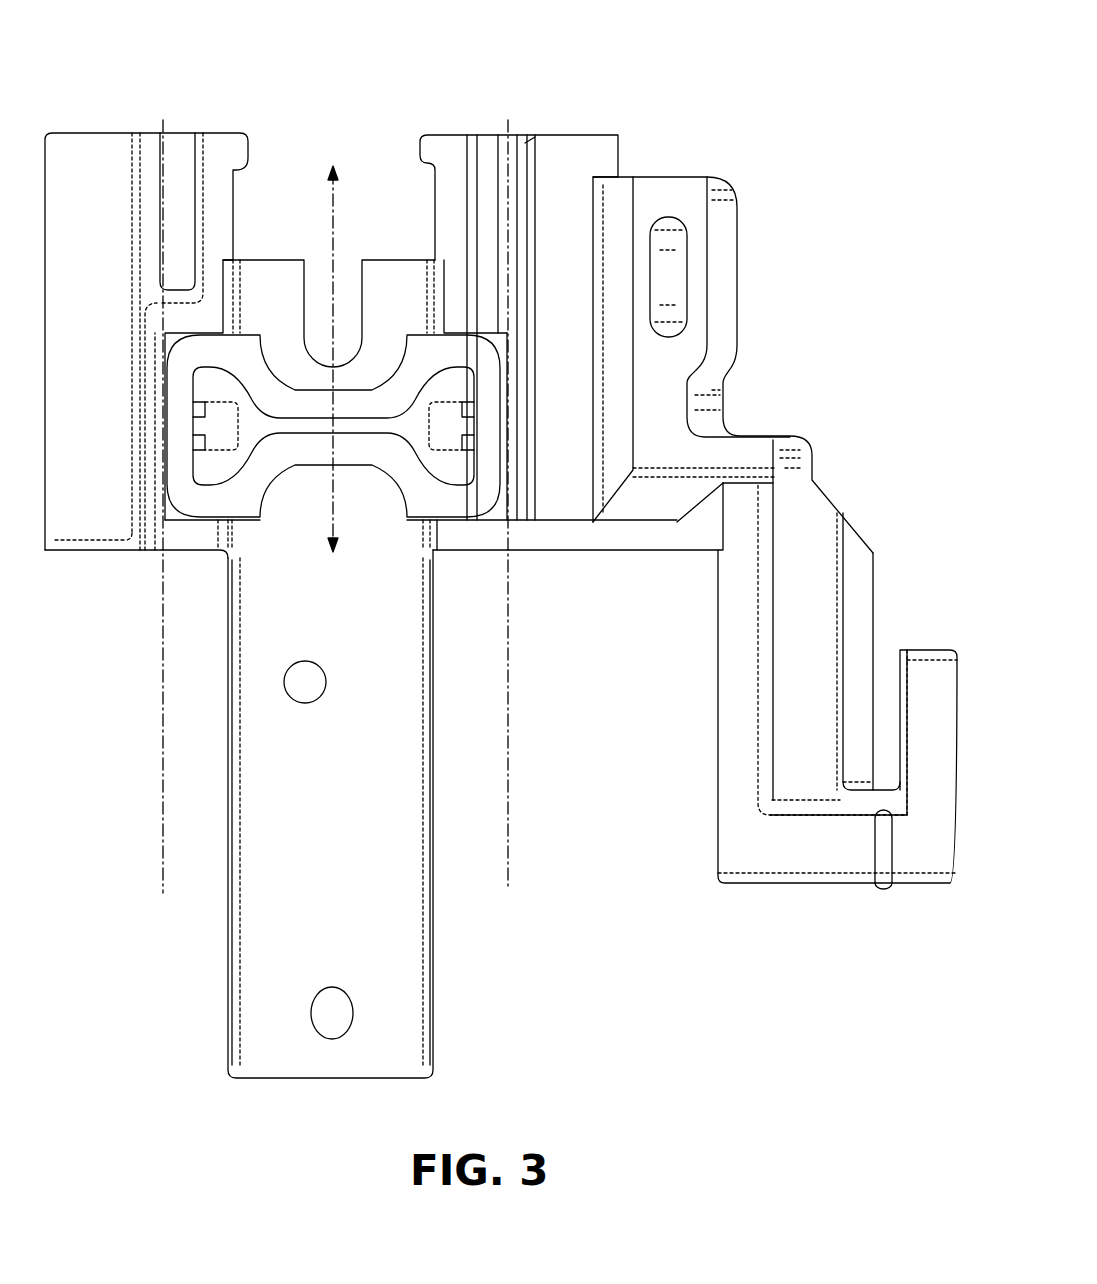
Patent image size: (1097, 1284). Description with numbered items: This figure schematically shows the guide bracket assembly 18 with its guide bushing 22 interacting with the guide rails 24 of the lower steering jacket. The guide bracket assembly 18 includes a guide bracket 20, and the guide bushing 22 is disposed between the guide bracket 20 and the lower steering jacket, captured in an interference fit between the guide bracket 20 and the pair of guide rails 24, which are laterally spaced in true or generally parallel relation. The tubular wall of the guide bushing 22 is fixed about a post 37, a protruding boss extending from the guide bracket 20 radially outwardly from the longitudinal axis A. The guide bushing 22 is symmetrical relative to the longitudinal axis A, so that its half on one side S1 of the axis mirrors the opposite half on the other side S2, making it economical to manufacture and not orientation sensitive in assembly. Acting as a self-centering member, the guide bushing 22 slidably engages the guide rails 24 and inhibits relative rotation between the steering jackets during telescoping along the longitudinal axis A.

The guide bracket assembly 18 is at (618, 84).
The guide bracket 20 is at (718, 207).
The guide bushing 22 is at (374, 448).
The guide rail 24 is at (162, 757).
The post 37 is at (298, 448).
The longitudinal axis A is at (343, 498).
The one side S1 is at (293, 219).
The other side S2 is at (375, 219).